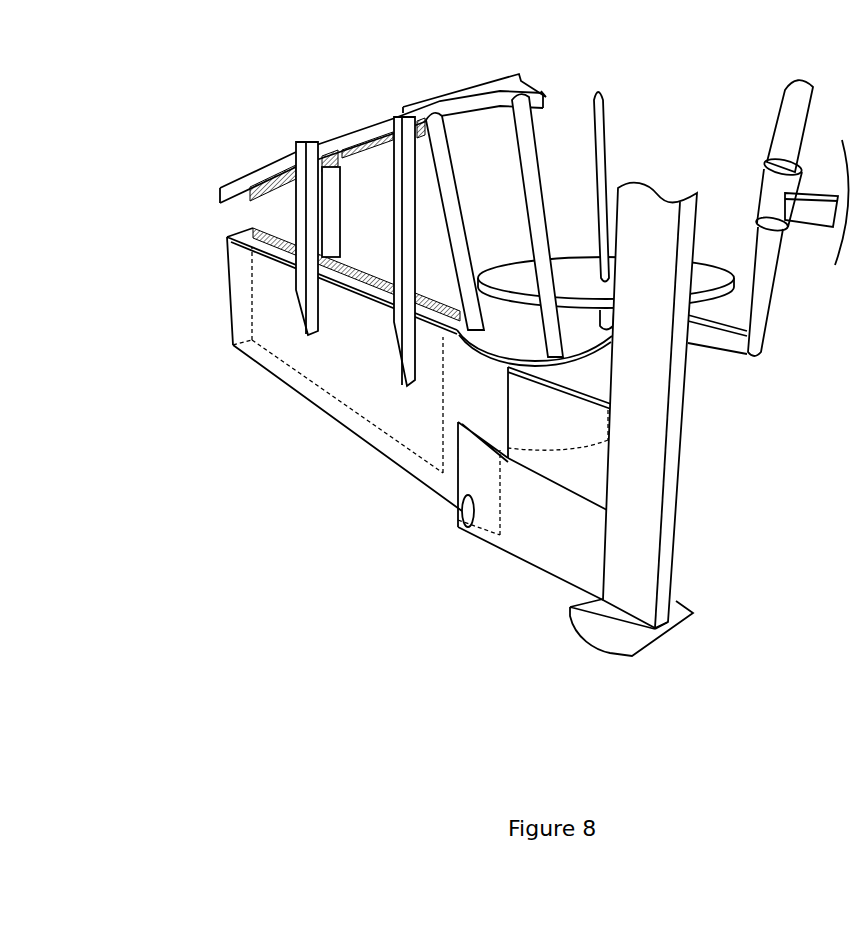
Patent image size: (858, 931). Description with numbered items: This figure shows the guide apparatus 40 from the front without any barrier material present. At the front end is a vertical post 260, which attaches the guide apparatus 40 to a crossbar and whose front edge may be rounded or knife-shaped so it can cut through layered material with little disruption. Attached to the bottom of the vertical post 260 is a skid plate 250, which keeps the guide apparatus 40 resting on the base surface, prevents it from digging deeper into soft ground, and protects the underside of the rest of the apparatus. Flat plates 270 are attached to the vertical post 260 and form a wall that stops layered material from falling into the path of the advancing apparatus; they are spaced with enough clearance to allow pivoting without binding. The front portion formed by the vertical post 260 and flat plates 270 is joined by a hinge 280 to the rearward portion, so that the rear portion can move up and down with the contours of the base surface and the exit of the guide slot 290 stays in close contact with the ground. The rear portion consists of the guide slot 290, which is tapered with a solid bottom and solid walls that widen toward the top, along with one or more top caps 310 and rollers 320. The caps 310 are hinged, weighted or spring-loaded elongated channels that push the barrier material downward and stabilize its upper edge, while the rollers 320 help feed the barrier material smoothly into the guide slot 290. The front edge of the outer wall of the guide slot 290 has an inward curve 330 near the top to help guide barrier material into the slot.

The guide apparatus 40 is at (183, 355).
The skid plate 250 is at (678, 620).
The vertical post 260 is at (653, 397).
The flat plates 270 is at (535, 483).
The hinge 280 is at (462, 513).
The guide slot 290 is at (300, 356).
The caps 310 is at (245, 172).
The rollers 320 is at (526, 140).
The inward curve 330 is at (534, 390).